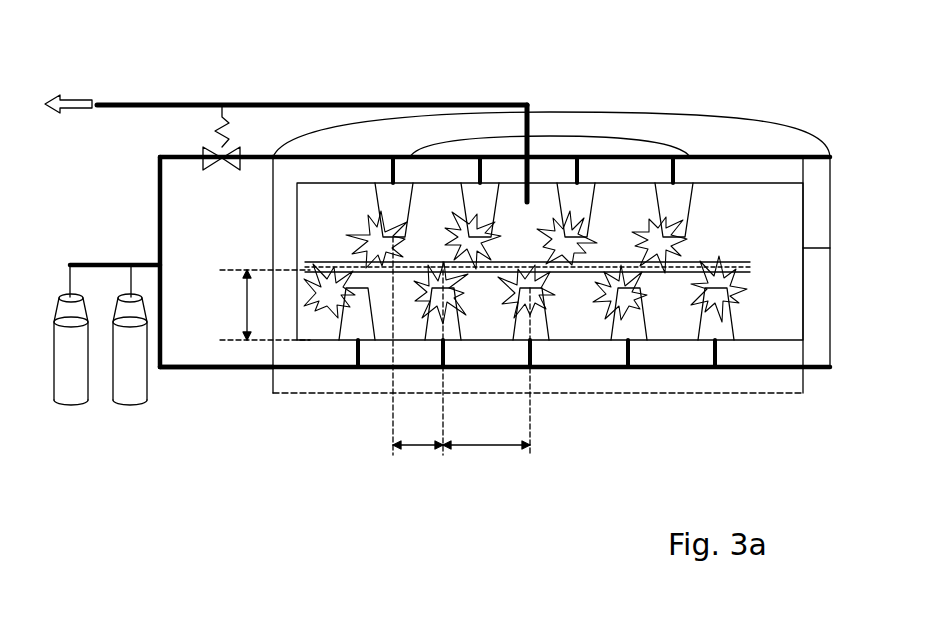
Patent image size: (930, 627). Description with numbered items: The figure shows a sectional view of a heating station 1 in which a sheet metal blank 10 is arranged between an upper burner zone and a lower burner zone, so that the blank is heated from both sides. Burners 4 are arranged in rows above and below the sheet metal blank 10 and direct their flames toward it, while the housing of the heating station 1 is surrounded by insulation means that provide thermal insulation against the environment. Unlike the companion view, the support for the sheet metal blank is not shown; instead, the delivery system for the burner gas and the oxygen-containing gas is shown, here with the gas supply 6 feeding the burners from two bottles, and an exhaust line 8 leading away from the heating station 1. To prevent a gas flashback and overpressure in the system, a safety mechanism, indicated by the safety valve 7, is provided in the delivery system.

The heating station 1 is at (548, 76).
The plasma nozzles 4 is at (675, 200).
The process gas supply 6 is at (226, 368).
The valve 7 is at (228, 198).
The exhaust line 8 is at (320, 102).
The sheet metal blank 10 is at (740, 262).